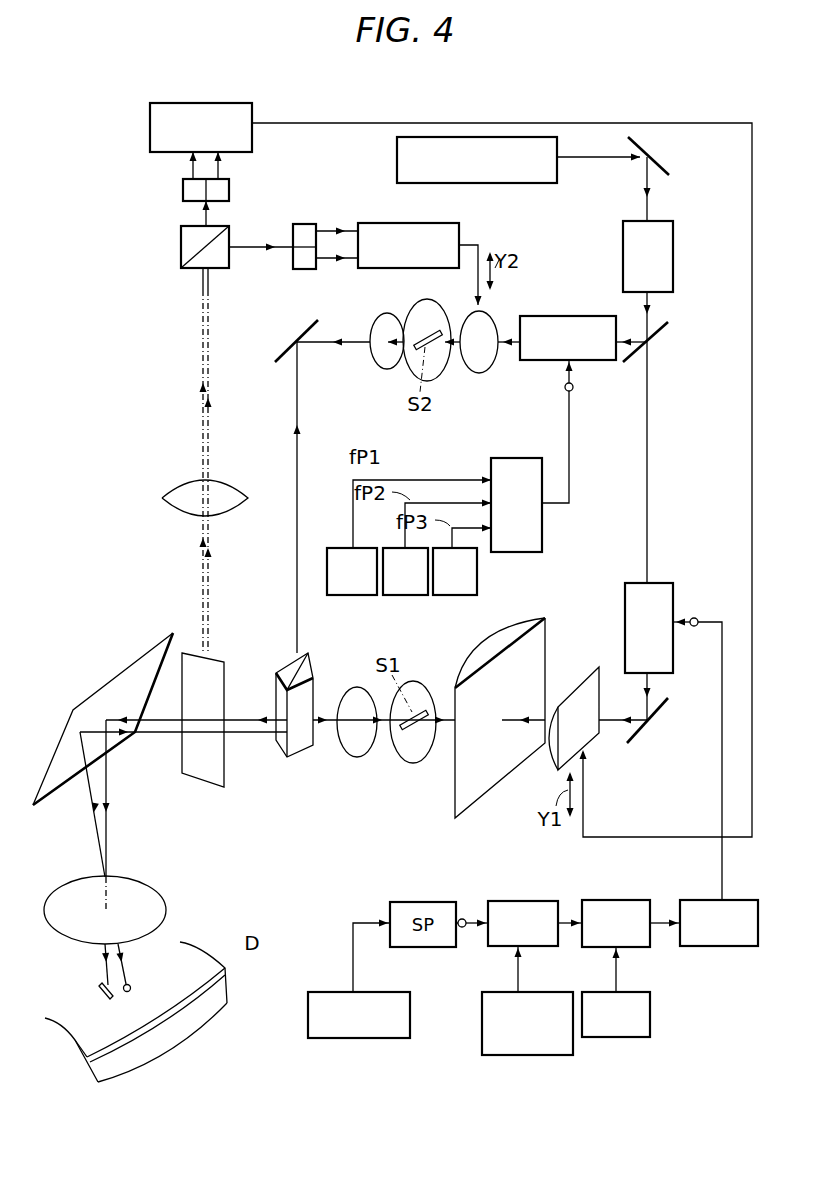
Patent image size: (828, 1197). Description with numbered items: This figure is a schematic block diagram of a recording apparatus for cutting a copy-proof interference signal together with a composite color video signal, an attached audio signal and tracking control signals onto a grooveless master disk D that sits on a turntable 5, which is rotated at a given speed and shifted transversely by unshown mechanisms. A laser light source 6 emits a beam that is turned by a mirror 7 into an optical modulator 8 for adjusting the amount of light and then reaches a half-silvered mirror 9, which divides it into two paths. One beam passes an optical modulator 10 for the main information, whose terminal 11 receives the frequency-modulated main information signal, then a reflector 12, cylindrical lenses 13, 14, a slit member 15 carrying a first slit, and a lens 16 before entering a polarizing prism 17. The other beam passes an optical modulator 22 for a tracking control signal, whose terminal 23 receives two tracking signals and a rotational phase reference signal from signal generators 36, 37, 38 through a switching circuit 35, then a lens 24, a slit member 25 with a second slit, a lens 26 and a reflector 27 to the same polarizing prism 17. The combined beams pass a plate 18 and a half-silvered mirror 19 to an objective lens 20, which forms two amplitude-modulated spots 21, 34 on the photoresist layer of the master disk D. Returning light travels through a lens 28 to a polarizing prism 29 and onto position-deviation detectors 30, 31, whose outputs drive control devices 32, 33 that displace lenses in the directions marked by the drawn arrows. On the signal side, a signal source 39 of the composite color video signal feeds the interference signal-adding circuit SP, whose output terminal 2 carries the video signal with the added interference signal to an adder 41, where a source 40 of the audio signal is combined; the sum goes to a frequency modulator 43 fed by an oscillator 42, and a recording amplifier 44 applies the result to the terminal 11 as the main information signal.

The output terminal 2 is at (473, 900).
The turntable 5 is at (143, 1012).
The laser light source 6 is at (508, 183).
The mirror 7 is at (640, 140).
The optical modulator for adjusting the amount of light 8 is at (673, 230).
The half-silvered mirror 9 is at (662, 330).
The optical modulator for the main information 10 is at (623, 600).
The terminal 11 is at (694, 627).
The reflector 12 is at (640, 737).
The cylindrical lens 13 is at (587, 683).
The cylindrical lens 14 is at (493, 772).
The slit member 15 is at (420, 752).
The lens 16 is at (362, 745).
The polarizing prism 17 is at (300, 740).
The plate prism 18 is at (224, 726).
The half-silvered mirror 19 is at (132, 668).
The objective lens 20 is at (105, 926).
The spot 21 is at (96, 984).
The optical modulator for a tracking control signal 22 is at (557, 316).
The terminal 23 is at (573, 387).
The lens 24 is at (493, 352).
The slit member 25 is at (443, 367).
The lens 26 is at (380, 364).
The reflector 27 is at (288, 345).
The lens 28 is at (202, 478).
The polarizing prism 29 is at (178, 249).
The position-deviation detector 30 is at (182, 192).
The position-deviation detector 31 is at (303, 272).
The control device 32 is at (213, 103).
The control device 33 is at (410, 223).
The spot 34 is at (146, 968).
The switching circuit 35 is at (513, 456).
The signal generator 36 is at (337, 597).
The signal generator 37 is at (400, 597).
The signal generator 38 is at (445, 597).
The signal source of the composite color video signal 39 is at (359, 998).
The source of an audio signal 40 is at (527, 1057).
The adder 41 is at (535, 906).
The oscillator 42 is at (622, 1038).
The frequency modulator 43 is at (622, 898).
The recording amplifier 44 is at (738, 898).